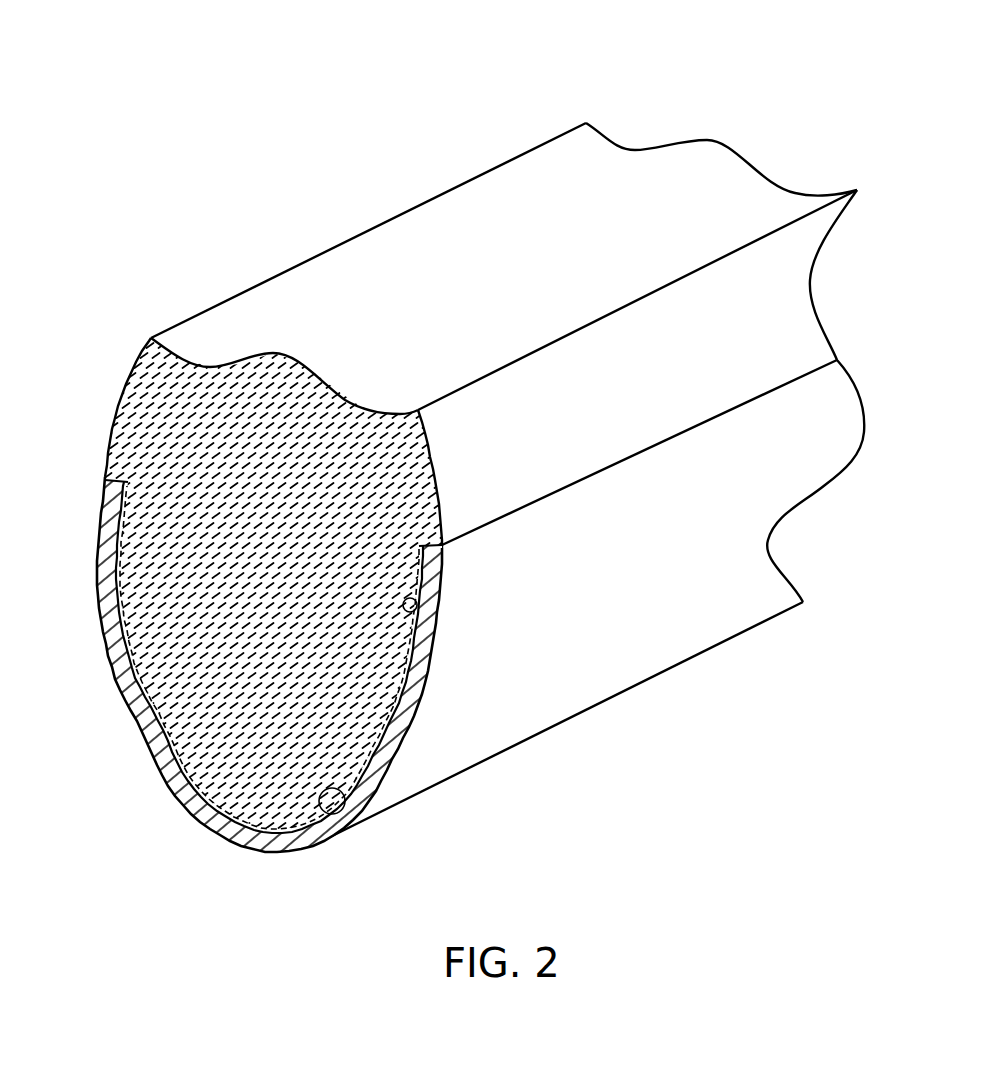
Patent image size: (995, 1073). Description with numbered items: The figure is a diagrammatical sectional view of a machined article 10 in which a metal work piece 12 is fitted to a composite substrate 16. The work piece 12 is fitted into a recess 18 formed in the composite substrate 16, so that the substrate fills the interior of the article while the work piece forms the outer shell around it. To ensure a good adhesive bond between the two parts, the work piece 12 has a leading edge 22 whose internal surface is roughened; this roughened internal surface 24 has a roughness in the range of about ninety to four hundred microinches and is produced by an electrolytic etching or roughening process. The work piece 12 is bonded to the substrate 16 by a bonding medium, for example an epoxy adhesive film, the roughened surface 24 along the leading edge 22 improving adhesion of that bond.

The machined article 10 is at (183, 83).
The work piece 12 is at (150, 748).
The composite substrate 16 is at (147, 423).
The recess 18 is at (416, 599).
The leading edge 22 is at (220, 826).
The roughened internal surface 24 is at (335, 814).